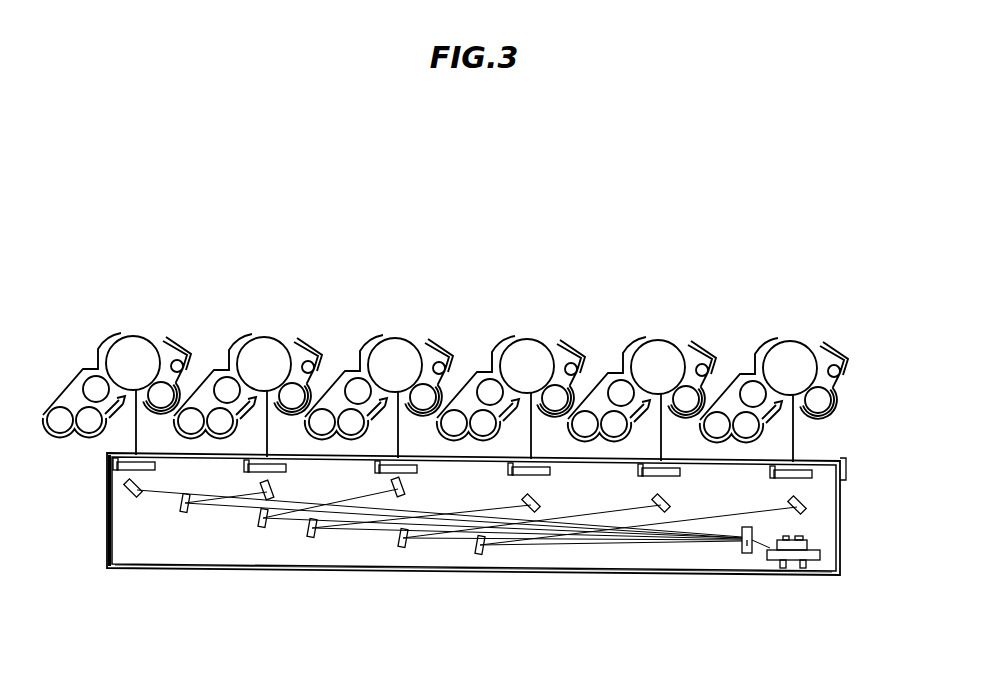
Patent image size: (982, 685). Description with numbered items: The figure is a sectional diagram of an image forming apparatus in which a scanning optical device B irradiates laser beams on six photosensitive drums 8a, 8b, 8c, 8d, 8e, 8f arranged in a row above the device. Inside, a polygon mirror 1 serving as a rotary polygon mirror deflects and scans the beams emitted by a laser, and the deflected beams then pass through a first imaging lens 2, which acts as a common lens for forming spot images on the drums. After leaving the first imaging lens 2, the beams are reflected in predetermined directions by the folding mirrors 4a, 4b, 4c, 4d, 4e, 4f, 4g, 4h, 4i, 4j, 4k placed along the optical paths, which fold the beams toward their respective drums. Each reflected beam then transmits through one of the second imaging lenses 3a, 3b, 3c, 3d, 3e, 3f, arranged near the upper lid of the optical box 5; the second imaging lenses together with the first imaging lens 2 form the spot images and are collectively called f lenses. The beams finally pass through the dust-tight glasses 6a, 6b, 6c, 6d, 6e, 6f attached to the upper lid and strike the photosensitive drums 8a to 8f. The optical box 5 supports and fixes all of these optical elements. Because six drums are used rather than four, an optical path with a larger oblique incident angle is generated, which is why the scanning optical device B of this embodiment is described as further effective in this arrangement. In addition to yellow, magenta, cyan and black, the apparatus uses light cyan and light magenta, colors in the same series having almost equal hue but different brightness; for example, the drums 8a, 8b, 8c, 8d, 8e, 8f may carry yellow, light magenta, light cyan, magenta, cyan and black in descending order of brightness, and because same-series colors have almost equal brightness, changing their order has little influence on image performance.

The polygon mirror 1 is at (800, 569).
The first imaging lens 2 is at (747, 554).
The second imaging lens 3a is at (160, 446).
The second imaging lens 3b is at (291, 446).
The second imaging lens 3c is at (422, 446).
The second imaging lens 3d is at (555, 446).
The second imaging lens 3e is at (685, 446).
The second imaging lens 3f is at (817, 446).
The folding mirror 4a is at (128, 495).
The folding mirror 4b is at (185, 513).
The folding mirror 4c is at (263, 498).
The folding mirror 4d is at (263, 528).
The folding mirror 4e is at (396, 497).
The folding mirror 4f is at (312, 538).
The folding mirror 4g is at (531, 513).
The folding mirror 4h is at (403, 548).
The folding mirror 4i is at (480, 555).
The folding mirror 4j is at (661, 513).
The folding mirror 4k is at (806, 509).
The optical box 5 is at (427, 585).
The dust-tight glass 6a is at (112, 462).
The dust-tight glass 6b is at (243, 464).
The dust-tight glass 6c is at (374, 466).
The dust-tight glass 6d is at (507, 467).
The dust-tight glass 6e is at (637, 469).
The dust-tight glass 6f is at (769, 471).
The photosensitive drum 8a is at (137, 355).
The photosensitive drum 8b is at (268, 355).
The photosensitive drum 8c is at (399, 355).
The photosensitive drum 8d is at (531, 355).
The photosensitive drum 8e is at (660, 355).
The photosensitive drum 8f is at (790, 355).
The scanning optical device B is at (130, 580).